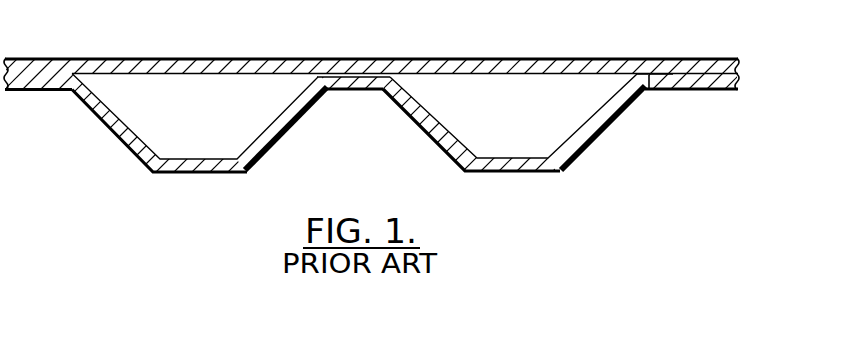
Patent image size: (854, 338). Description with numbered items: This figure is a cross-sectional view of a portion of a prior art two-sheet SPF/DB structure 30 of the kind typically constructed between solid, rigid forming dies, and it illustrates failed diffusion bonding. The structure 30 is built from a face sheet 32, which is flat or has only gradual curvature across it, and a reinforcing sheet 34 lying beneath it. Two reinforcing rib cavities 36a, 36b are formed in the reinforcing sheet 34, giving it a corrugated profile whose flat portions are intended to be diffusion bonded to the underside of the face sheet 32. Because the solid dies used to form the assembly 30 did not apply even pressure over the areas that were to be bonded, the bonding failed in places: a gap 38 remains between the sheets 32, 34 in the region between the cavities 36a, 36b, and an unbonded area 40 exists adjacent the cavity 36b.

The two-sheet SPF/DB structure 30 is at (620, 43).
The face sheet 32 is at (203, 58).
The reinforcing sheet 34 is at (427, 100).
The reinforcing rib cavity 36a is at (150, 134).
The reinforcing rib cavity 36b is at (570, 120).
The gap 38 is at (352, 74).
The unbonded area 40 is at (650, 90).